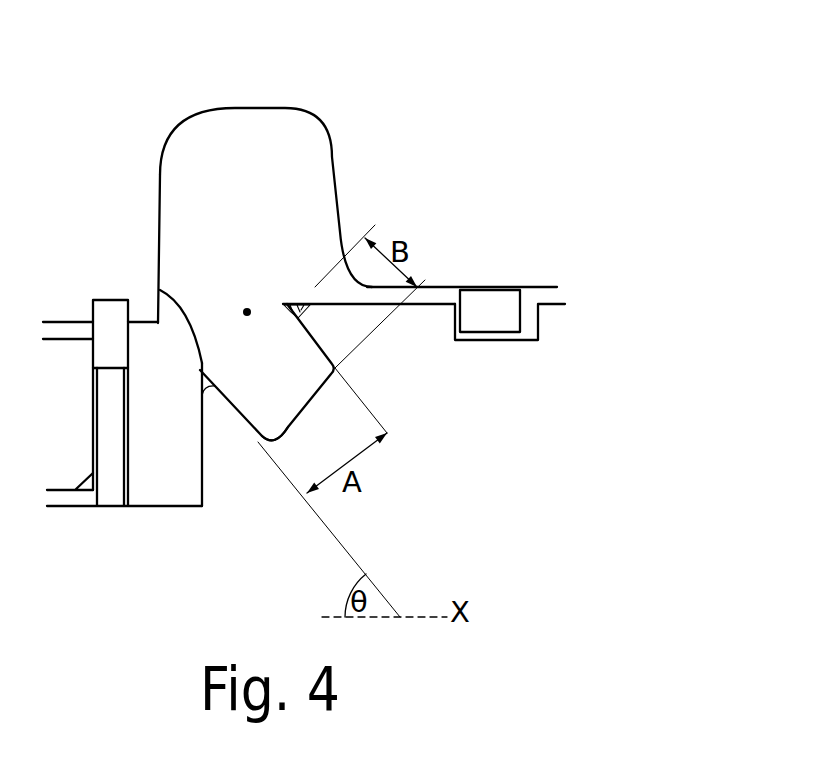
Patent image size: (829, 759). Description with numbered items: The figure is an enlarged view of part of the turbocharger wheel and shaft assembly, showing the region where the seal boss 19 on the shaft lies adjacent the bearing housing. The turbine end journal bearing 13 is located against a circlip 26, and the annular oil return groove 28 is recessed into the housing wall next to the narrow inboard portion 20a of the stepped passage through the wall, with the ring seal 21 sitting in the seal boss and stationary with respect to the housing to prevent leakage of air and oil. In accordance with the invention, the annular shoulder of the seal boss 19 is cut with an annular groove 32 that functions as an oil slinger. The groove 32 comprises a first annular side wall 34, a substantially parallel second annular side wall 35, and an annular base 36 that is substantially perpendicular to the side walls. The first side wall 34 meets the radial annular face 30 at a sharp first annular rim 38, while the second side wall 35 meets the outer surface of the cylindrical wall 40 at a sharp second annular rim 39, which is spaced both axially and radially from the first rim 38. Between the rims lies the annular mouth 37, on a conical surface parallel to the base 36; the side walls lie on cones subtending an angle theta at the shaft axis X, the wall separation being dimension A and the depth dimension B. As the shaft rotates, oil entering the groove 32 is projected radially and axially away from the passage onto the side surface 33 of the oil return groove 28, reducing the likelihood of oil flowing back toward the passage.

The turbine end journal bearing 13 is at (92, 417).
The seal boss 19 is at (383, 390).
The inboard portion of passage 20a is at (435, 298).
The ring seal 21 is at (487, 312).
The circlip 26 is at (108, 308).
The annular oil return groove 28 is at (244, 143).
The annular face 30 is at (200, 477).
The annular groove 32 is at (285, 388).
The side surface of the oil groove 33 is at (160, 182).
The first annular side wall 34 is at (243, 430).
The second annular side wall 35 is at (310, 333).
The annular base 36 is at (293, 417).
The annular mouth 37 is at (247, 312).
The first annular rim 38 is at (162, 298).
The second annular rim 39 is at (288, 303).
The cylindrical wall 40 is at (413, 303).